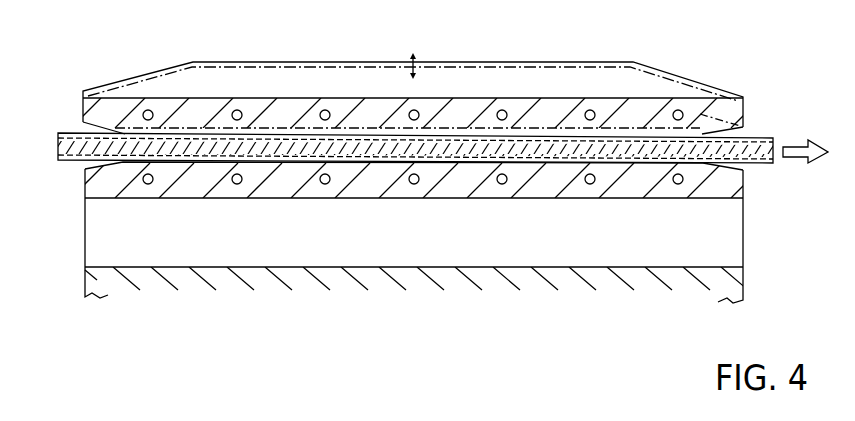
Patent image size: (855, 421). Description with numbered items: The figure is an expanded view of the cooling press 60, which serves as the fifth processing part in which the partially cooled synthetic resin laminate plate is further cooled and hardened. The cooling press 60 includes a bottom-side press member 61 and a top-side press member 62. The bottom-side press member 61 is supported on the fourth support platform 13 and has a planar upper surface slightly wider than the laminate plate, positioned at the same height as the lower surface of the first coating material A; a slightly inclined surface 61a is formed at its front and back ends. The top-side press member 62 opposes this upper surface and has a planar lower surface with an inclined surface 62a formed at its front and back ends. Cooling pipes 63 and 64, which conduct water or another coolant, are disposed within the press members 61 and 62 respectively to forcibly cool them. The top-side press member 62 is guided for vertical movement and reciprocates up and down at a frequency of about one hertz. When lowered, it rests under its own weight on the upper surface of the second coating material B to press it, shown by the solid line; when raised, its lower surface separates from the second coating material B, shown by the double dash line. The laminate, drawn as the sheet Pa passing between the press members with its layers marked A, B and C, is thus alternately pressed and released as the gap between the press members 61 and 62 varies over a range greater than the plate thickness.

The fourth support platform 13 is at (140, 279).
The cooling press 60 is at (542, 58).
The bottom-side press member 61 is at (737, 192).
The slightly inclined surface 61a is at (85, 167).
The top-side press member 62 is at (622, 112).
The inclined surface 62a is at (120, 133).
The cooling pipes 63 is at (148, 184).
The cooling pipes 64 is at (237, 110).
The paper sheet Pa is at (274, 161).
The first coating material A is at (566, 165).
The second coating material B is at (617, 150).
The region C is at (661, 150).